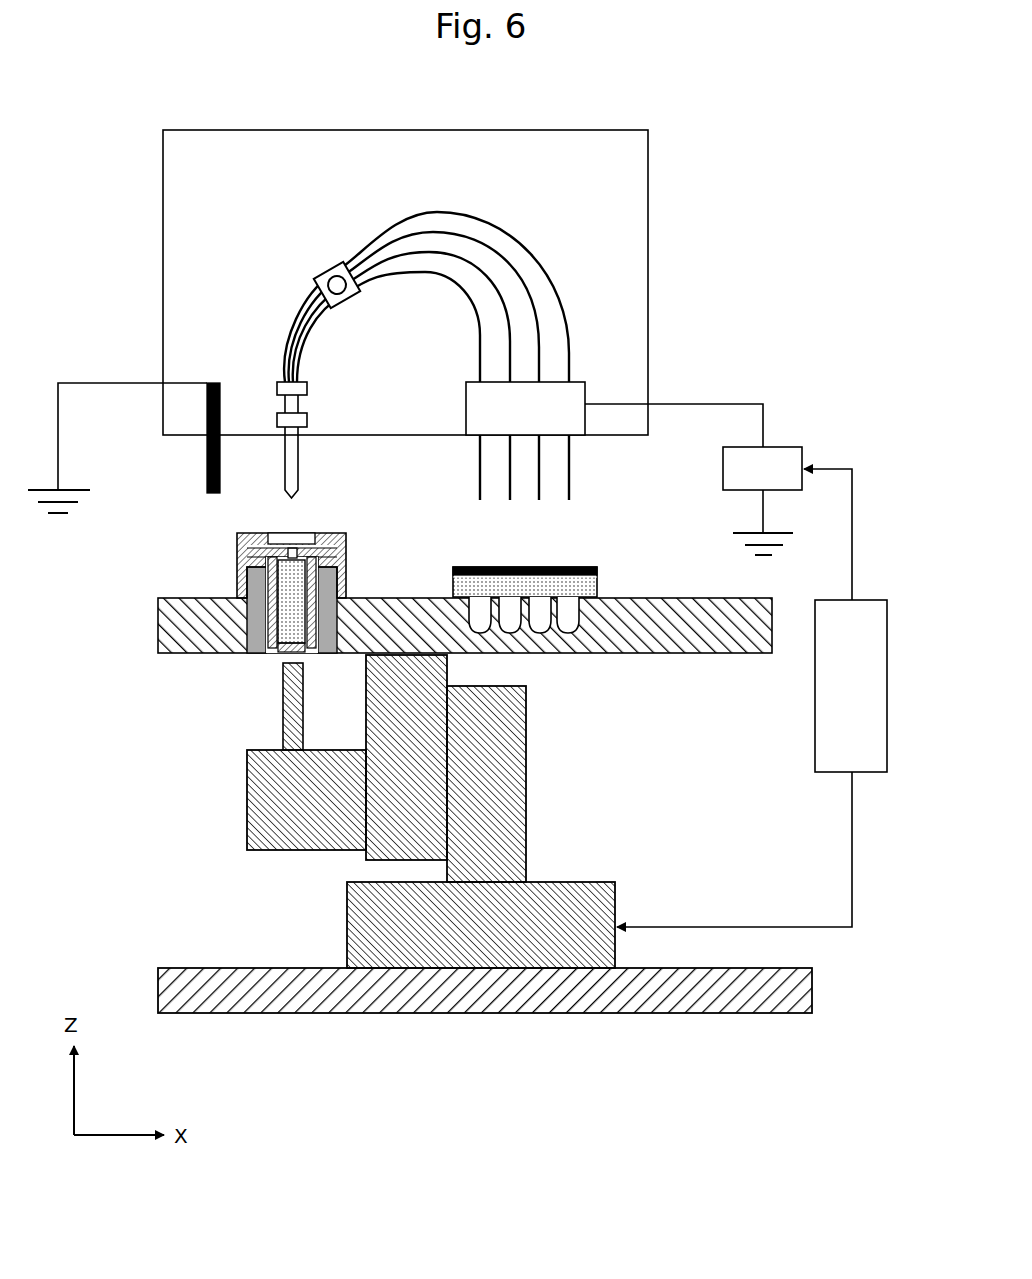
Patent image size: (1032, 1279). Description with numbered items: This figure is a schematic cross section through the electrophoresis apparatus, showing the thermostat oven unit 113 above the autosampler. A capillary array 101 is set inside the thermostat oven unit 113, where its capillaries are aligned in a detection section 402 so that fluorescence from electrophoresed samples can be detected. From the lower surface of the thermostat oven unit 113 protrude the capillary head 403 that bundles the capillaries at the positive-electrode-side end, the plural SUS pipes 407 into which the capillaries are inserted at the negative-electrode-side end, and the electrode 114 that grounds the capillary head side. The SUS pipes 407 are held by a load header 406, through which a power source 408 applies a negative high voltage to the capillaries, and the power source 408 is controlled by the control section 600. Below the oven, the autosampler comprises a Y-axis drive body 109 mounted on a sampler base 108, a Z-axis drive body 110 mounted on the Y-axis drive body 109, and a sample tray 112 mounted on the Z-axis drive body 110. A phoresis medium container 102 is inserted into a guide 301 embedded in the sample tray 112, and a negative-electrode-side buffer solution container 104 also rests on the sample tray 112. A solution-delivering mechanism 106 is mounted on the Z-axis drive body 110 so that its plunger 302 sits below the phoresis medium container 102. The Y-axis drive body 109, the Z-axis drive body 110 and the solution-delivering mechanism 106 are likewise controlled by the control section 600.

The capillary array 101 is at (503, 210).
The phoresis medium container 102 is at (237, 548).
The negative-electrode-side buffer solution container 104 is at (596, 577).
The solution-delivering mechanism 106 is at (247, 803).
The sampler base 108 is at (478, 1015).
The Y-axis drive body 109 is at (526, 763).
The Z-axis drive body 110 is at (372, 820).
The sample tray 112 is at (693, 655).
The thermostat oven unit 113 is at (648, 262).
The electrode 114 is at (207, 455).
The guide 301 is at (240, 645).
The plunger 302 is at (283, 713).
The detection section 402 is at (320, 268).
The capillary head 403 is at (302, 463).
The load header 406 is at (468, 397).
The SUS pipe 407 is at (572, 468).
The power source 408 is at (785, 447).
The control section 600 is at (870, 600).